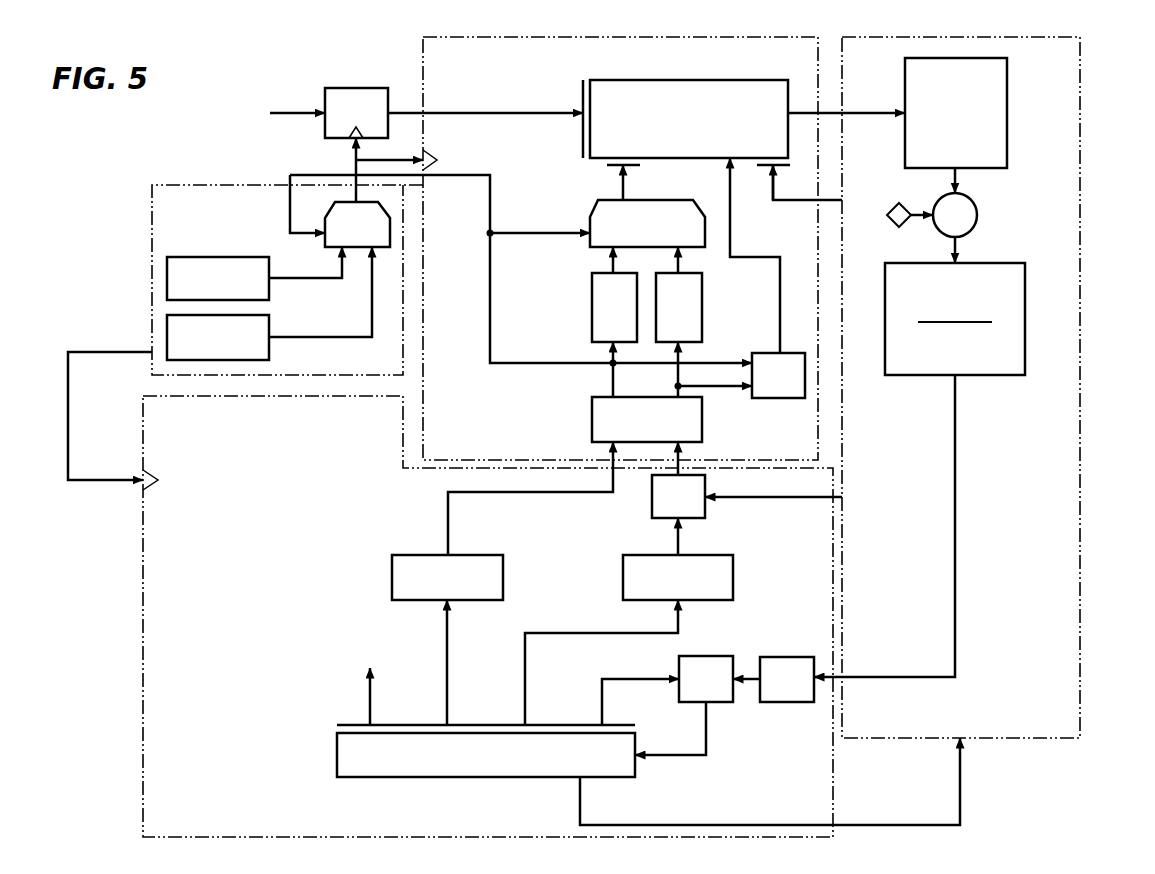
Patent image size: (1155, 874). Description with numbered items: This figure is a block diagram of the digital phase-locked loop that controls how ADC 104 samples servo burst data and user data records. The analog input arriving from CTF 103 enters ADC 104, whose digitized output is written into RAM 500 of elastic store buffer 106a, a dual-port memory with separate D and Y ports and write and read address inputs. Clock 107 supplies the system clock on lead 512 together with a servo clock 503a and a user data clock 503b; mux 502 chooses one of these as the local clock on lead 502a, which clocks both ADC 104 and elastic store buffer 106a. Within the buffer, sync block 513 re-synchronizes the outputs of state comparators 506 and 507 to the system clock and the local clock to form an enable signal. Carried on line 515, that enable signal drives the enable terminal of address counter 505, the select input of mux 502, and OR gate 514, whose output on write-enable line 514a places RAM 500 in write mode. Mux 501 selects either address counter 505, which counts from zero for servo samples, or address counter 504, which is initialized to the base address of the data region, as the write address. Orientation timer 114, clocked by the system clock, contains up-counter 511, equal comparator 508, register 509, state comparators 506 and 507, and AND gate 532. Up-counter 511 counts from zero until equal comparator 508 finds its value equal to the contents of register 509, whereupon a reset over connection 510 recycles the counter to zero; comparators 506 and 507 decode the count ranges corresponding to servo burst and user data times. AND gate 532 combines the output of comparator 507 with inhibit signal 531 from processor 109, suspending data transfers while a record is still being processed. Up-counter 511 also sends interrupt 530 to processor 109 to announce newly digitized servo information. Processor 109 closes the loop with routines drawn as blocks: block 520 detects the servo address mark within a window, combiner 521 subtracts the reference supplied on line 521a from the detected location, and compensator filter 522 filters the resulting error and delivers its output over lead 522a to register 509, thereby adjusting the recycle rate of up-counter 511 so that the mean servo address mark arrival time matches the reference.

The continuous time filter 103 is at (238, 113).
The ADC 104 is at (336, 88).
The elastic store buffer 106a is at (423, 62).
The clock 107 is at (175, 185).
The processor 109 is at (1080, 62).
The orientation timer 114 is at (143, 410).
The RAM 500 is at (610, 80).
The mux 501 is at (593, 207).
The mux 502 is at (325, 242).
The lead 502a is at (360, 157).
The servo clock 503a is at (212, 257).
The user data clock 503b is at (270, 327).
The address counter 504 is at (702, 315).
The address counter 505 is at (592, 315).
The state comparator 506 is at (392, 572).
The state comparator 507 is at (733, 578).
The equal comparator 508 is at (702, 656).
The register 509 is at (782, 657).
The reset line 510 is at (668, 758).
The up-counter 511 is at (485, 777).
The lead 512 is at (108, 480).
The synchronizer block 513 is at (592, 423).
The OR gate 514 is at (777, 400).
The write enable line 514a is at (757, 257).
The enable line 515 is at (490, 338).
The block 520 is at (1007, 98).
The combiner 521 is at (977, 218).
The line 521a is at (912, 222).
The compensator filter 522 is at (988, 378).
The lead 522a is at (887, 680).
The interrupt signal 530 is at (855, 825).
The inhibit signal 531 is at (790, 500).
The AND gate 532 is at (652, 505).